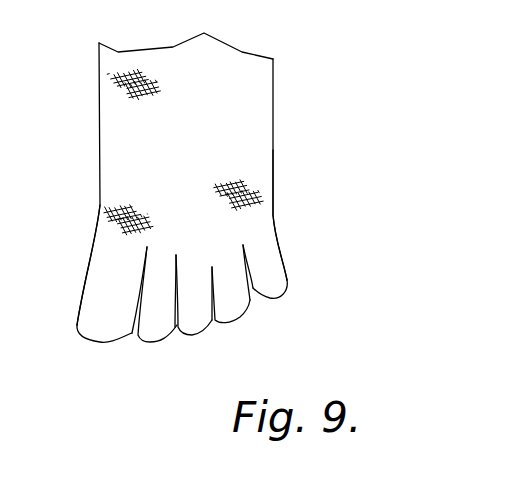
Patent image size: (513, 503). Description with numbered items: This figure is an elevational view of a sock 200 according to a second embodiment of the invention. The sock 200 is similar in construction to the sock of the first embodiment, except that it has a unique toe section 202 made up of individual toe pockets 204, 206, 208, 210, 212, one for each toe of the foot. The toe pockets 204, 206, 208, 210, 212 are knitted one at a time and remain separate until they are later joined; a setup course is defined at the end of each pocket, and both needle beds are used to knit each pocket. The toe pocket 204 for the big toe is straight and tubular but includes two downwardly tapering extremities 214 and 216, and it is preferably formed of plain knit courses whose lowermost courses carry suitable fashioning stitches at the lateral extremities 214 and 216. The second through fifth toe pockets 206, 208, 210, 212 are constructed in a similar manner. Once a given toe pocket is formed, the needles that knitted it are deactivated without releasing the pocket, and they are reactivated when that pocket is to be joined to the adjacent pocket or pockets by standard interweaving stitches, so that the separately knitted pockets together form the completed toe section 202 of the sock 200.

The sock 200 is at (290, 77).
The toe section 202 is at (280, 243).
The toe pocket 204 is at (85, 305).
The toe pocket 206 is at (157, 333).
The toe pocket 208 is at (200, 327).
The toe pocket 210 is at (242, 313).
The toe pocket 212 is at (277, 283).
The downwardly tapering extremity 214 is at (77, 327).
The downwardly tapering extremity 216 is at (123, 337).